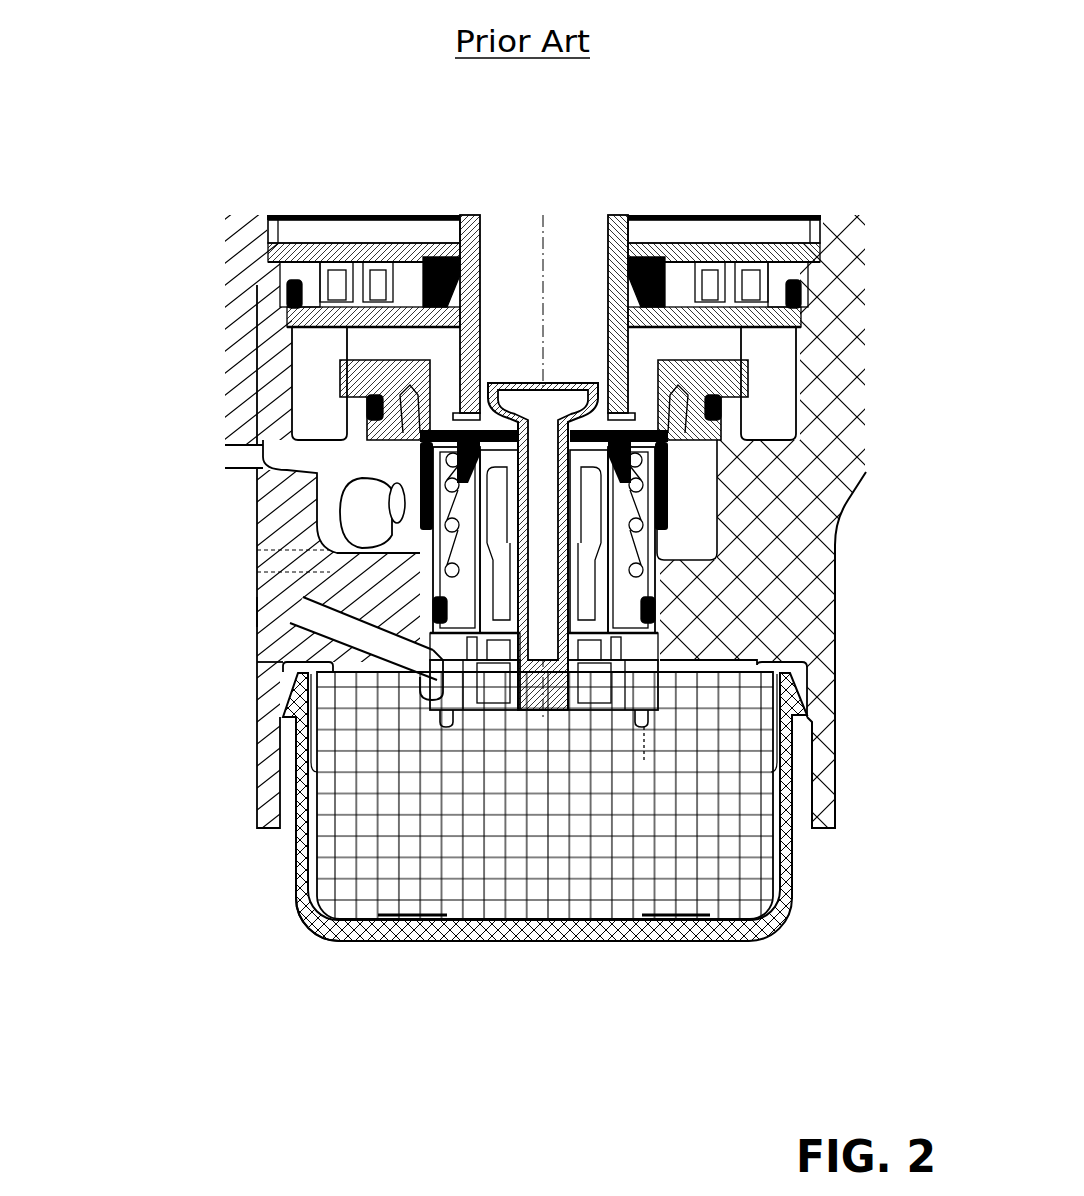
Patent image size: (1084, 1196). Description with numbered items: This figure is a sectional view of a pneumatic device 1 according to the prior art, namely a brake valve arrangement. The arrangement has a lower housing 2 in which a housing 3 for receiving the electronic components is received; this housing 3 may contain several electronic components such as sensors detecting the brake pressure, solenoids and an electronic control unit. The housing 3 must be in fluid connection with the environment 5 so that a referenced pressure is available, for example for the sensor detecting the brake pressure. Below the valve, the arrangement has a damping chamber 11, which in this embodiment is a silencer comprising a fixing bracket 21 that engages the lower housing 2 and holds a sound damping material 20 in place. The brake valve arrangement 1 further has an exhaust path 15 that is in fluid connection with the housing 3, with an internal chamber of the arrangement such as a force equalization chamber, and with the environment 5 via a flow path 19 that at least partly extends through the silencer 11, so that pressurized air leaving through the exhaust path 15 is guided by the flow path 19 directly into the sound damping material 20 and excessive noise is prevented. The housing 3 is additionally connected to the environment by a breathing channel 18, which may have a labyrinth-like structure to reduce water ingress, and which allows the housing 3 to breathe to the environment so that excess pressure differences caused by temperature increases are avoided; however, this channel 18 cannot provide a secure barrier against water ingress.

The pneumatic device 1 is at (820, 142).
The lower housing 2 is at (782, 596).
The housing for receiving the electronic components 3 is at (259, 625).
The environment 5 is at (309, 1026).
The damping chamber 11 is at (288, 897).
The exhaust path 15 is at (497, 308).
The breathing channel 18 is at (297, 602).
The flow path 19 is at (533, 622).
The sound damping material 20 is at (592, 847).
The fixing bracket 21 is at (777, 883).